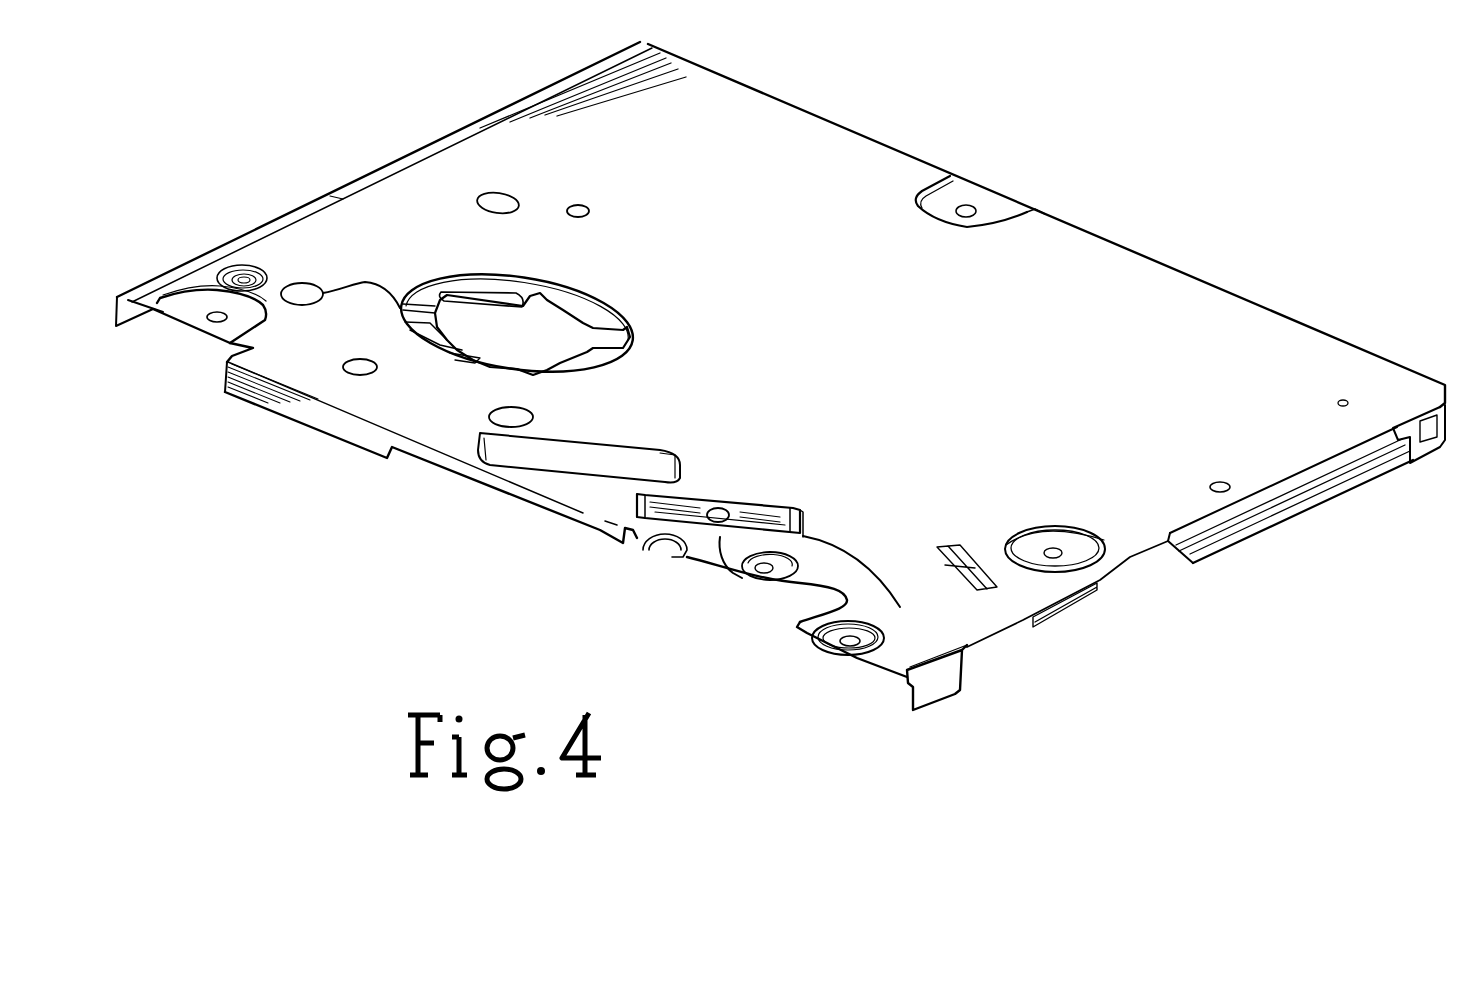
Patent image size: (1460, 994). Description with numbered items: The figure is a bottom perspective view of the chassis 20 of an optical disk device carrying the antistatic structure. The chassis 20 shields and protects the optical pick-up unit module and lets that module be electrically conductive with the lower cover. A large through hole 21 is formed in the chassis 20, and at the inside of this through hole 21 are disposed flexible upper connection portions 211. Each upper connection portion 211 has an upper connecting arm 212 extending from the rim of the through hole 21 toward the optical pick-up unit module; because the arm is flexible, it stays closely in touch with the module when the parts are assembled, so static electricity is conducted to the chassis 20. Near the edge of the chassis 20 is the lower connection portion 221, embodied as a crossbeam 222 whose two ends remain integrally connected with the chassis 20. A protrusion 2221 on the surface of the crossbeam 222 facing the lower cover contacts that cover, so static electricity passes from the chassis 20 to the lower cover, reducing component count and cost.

The chassis 20 is at (1008, 188).
The through hole 21 is at (282, 297).
The upper connection portion 211 is at (479, 292).
The upper connecting arm 212 is at (513, 307).
The lower connection portion 221 is at (900, 607).
The crossbeam 222 is at (723, 528).
The protrusion 2221 is at (710, 517).